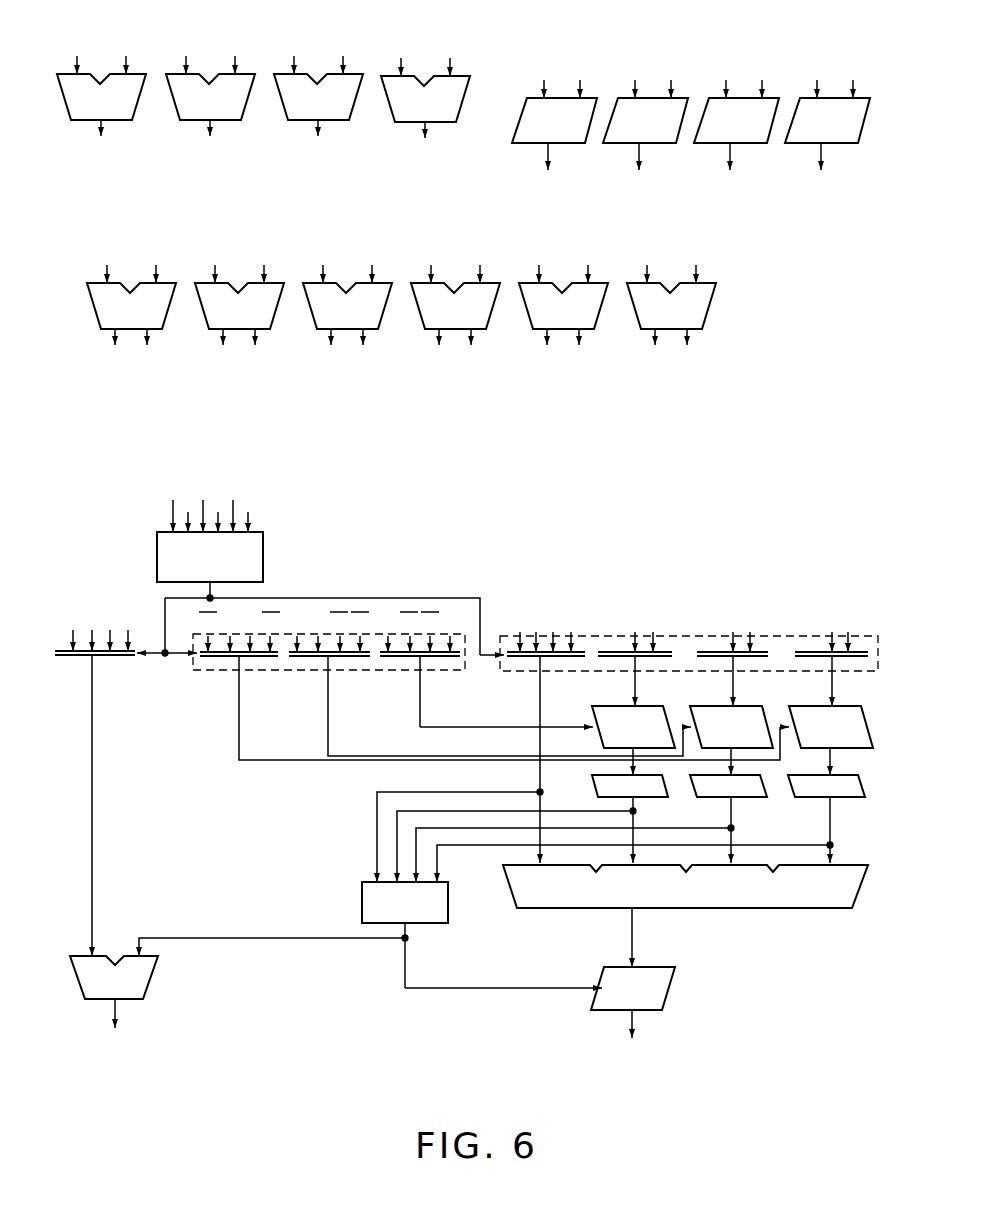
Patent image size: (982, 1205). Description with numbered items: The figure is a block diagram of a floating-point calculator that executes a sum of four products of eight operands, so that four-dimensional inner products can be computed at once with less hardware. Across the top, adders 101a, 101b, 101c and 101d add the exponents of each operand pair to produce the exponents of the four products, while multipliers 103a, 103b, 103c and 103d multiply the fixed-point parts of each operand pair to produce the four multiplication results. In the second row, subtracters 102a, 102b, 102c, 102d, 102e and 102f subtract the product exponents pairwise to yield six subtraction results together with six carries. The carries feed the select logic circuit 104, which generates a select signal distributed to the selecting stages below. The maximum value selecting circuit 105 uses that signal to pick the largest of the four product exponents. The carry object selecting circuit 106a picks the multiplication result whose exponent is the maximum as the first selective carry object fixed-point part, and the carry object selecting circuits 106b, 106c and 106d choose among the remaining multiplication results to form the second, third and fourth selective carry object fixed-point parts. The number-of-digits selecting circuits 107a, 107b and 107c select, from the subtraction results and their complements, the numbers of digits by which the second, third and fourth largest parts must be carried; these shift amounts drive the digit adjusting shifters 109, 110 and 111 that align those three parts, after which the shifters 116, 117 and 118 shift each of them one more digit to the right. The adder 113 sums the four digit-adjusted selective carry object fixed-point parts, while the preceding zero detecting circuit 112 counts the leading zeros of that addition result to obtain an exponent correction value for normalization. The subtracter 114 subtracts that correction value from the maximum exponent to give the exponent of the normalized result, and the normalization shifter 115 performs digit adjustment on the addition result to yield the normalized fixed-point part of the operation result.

The adder 101a is at (141, 98).
The adder 101b is at (250, 98).
The adder 101c is at (358, 98).
The adder 101d is at (465, 100).
The subtracter 102a is at (172, 305).
The subtracter 102b is at (280, 305).
The subtracter 102c is at (388, 305).
The subtracter 102d is at (496, 305).
The subtracter 102e is at (604, 305).
The subtracter 102f is at (712, 305).
The multiplier 103a is at (522, 146).
The multiplier 103b is at (613, 146).
The multiplier 103c is at (704, 146).
The multiplier 103d is at (795, 146).
The select logic circuit 104 is at (265, 548).
The maximum value selecting circuit 105 is at (66, 658).
The carry object selecting circuit 106a is at (519, 658).
The carry object selecting circuit 106b is at (609, 658).
The carry object selecting circuit 106c is at (707, 658).
The carry object selecting circuit 106d is at (803, 658).
The number-of-digits selecting circuit 107a is at (392, 658).
The number-of-digits selecting circuit 107b is at (302, 658).
The number-of-digits selecting circuit 107c is at (216, 658).
The digit adjusting shifter 109 is at (602, 730).
The digit adjusting shifter 110 is at (765, 717).
The digit adjusting shifter 111 is at (862, 752).
The preceding zero detecting circuit 112 is at (450, 895).
The adder 113 is at (574, 910).
The subtracter 114 is at (156, 975).
The normalization shifter 115 is at (677, 985).
The shifter 116 is at (592, 790).
The shifter 117 is at (690, 790).
The shifter 118 is at (790, 790).